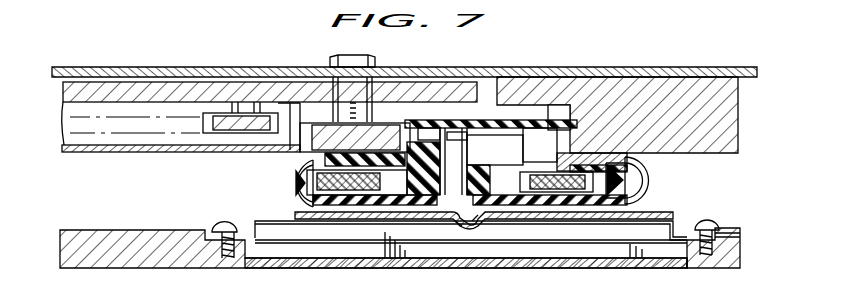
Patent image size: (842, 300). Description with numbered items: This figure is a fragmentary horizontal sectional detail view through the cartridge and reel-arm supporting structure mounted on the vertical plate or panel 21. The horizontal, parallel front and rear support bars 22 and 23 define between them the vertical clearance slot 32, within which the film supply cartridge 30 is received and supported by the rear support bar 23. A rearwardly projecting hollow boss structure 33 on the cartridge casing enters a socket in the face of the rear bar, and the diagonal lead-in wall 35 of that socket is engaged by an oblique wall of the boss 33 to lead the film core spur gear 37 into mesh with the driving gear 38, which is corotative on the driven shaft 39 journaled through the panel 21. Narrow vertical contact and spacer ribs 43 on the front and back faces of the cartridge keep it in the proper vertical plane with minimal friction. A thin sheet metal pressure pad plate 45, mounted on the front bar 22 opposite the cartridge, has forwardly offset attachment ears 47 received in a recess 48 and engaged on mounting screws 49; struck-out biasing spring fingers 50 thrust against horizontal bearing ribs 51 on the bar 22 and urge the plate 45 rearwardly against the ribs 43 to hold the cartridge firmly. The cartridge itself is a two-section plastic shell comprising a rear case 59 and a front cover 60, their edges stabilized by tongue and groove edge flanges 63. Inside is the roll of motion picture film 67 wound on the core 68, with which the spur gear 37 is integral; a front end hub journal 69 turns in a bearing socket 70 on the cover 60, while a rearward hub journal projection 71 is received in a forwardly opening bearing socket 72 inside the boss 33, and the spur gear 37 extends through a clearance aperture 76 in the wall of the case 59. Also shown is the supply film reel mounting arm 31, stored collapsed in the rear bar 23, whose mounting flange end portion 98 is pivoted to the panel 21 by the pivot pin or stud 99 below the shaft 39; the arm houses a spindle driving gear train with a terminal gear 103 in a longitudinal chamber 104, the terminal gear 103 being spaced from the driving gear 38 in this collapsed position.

The vertical plate or panel 21 is at (749, 68).
The front support bar 22 is at (722, 266).
The rear support bar 23 is at (732, 122).
The film supply cartridge 30 is at (657, 175).
The supply film reel mounting arm 31 is at (106, 153).
The vertical clearance slot 32 is at (100, 210).
The boss structure 33 is at (545, 118).
The diagonal lead-in wall 35 is at (560, 108).
The film core spur gear 37 is at (500, 140).
The driving gear 38 is at (313, 126).
The driven shaft 39 is at (376, 60).
The contact and spacer ribs 43 is at (636, 147).
The pressure pad plate 45 is at (672, 216).
The attachment ears 47 is at (212, 229).
The recess 48 is at (741, 236).
The mounting screws 49 is at (226, 226).
The biasing spring fingers 50 is at (356, 232).
The horizontal bearing ribs 51 is at (525, 250).
The rear section or case 59 is at (296, 157).
The front section or cover 60 is at (424, 209).
The tongue and groove edge flanges 63 is at (642, 181).
The roll of motion picture film 67 is at (592, 152).
The core 68 is at (512, 146).
The front end hub journal 69 is at (462, 222).
The bearing socket 70 is at (477, 215).
The hub journal projection 71 is at (455, 140).
The bearing socket 72 is at (432, 133).
The clearance aperture 76 is at (378, 152).
The mounting flange end portion 98 is at (418, 90).
The pivot pin or stud 99 is at (318, 82).
The terminal gear 103 is at (230, 114).
The longitudinal chamber 104 is at (130, 110).